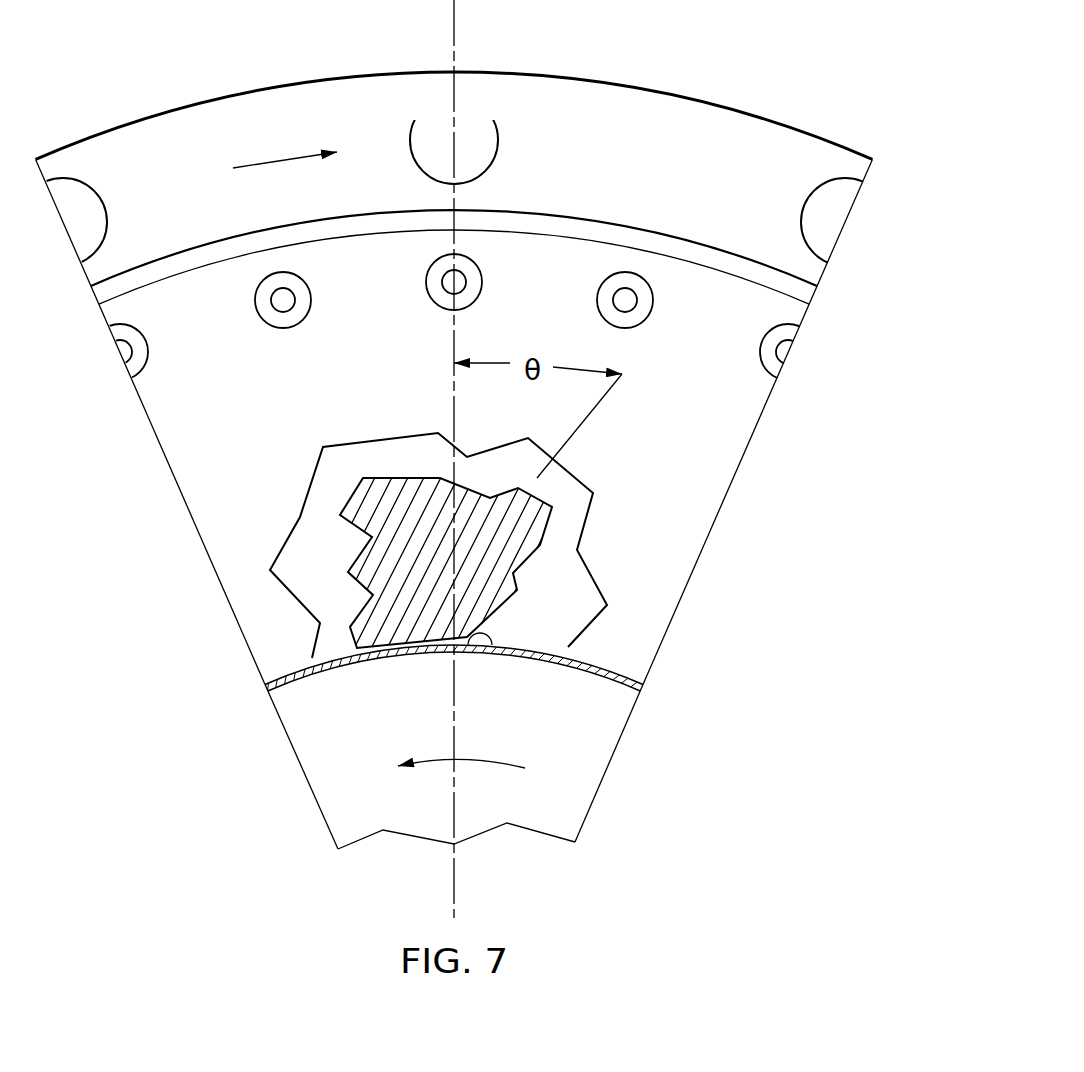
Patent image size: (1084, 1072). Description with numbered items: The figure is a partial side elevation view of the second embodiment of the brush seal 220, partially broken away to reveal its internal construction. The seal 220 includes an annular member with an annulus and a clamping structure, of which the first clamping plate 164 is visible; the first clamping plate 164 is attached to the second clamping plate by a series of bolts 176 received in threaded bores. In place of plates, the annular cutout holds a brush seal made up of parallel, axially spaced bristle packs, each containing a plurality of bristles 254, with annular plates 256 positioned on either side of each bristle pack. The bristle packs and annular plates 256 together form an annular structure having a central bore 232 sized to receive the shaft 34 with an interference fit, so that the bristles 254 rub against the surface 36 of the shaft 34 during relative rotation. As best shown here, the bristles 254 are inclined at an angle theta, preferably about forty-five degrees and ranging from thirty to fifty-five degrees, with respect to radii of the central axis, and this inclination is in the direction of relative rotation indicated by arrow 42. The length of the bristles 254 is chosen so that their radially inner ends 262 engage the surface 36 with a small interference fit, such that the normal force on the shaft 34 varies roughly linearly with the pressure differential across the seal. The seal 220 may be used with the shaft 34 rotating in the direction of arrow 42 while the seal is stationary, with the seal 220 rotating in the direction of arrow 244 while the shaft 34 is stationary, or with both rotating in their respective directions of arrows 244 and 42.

The brush seal 220 is at (737, 94).
The arrow indicating direction of seal rotation 244 is at (258, 162).
The bolts 176 is at (638, 310).
The first clamping plate 164 is at (747, 415).
The bristles 254 is at (523, 513).
The annular plates 256 is at (578, 597).
The central bore 232 is at (362, 661).
The radially inner ends 262 is at (383, 647).
The surface 36 is at (492, 638).
The shaft 34 is at (593, 750).
The arrow indicating direction of shaft rotation 42 is at (480, 763).